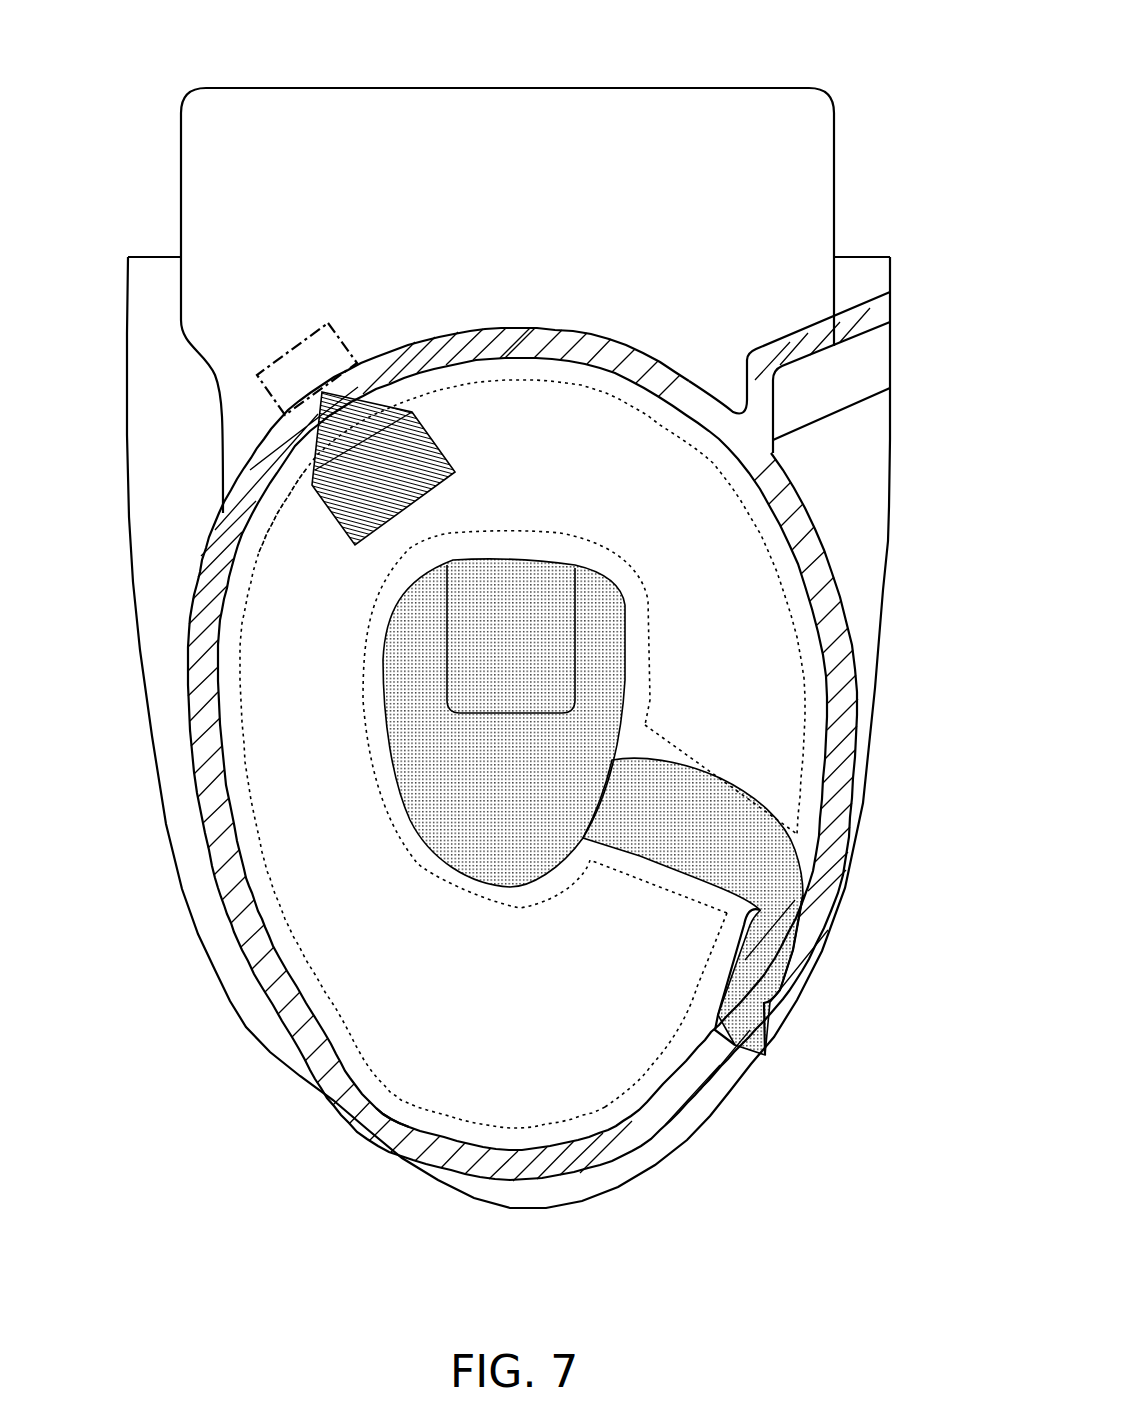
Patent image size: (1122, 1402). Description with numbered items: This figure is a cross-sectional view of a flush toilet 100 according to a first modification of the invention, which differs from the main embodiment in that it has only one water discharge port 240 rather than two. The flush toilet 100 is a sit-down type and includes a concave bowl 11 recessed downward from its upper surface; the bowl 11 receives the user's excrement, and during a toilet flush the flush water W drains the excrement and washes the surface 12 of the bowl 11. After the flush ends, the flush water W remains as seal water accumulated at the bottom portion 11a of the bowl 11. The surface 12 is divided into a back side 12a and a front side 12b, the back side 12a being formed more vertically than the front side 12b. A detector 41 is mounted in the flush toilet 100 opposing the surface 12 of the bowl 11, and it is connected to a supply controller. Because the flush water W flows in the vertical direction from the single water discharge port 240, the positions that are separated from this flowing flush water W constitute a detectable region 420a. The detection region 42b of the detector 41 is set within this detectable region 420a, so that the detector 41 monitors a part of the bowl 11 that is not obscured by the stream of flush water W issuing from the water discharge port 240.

The flush toilet 100 is at (889, 70).
The bowl 11 is at (378, 945).
The bottom portion 11a is at (543, 635).
The surface 12 is at (330, 818).
The back side 12a is at (330, 642).
The front side 12b is at (597, 997).
The flush water W is at (750, 855).
The water discharge port 240 is at (767, 907).
The detector 41 is at (290, 350).
The detection region 42b is at (313, 487).
The detectable region 420a is at (395, 1082).